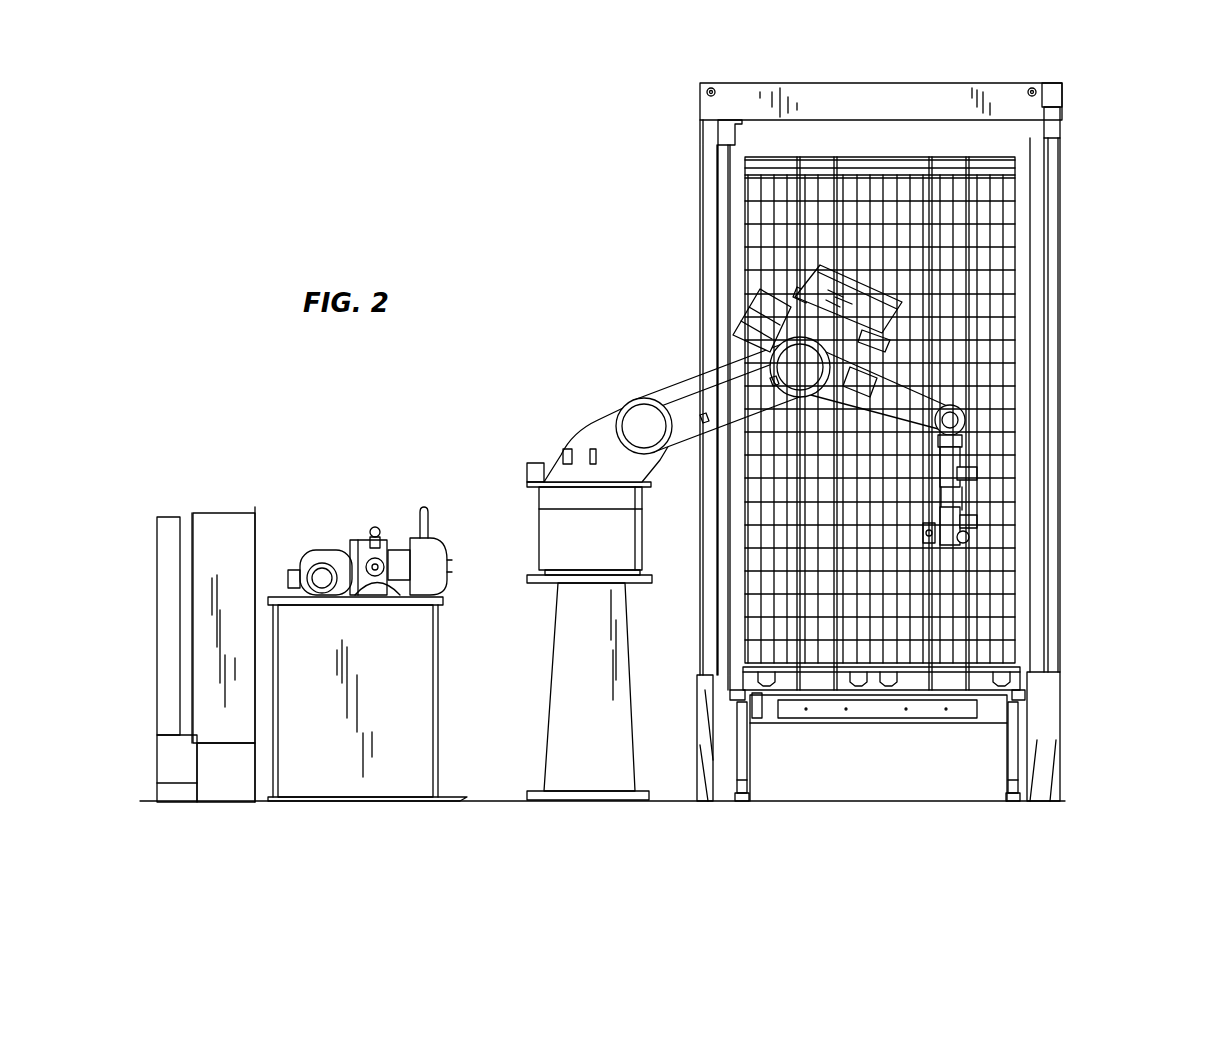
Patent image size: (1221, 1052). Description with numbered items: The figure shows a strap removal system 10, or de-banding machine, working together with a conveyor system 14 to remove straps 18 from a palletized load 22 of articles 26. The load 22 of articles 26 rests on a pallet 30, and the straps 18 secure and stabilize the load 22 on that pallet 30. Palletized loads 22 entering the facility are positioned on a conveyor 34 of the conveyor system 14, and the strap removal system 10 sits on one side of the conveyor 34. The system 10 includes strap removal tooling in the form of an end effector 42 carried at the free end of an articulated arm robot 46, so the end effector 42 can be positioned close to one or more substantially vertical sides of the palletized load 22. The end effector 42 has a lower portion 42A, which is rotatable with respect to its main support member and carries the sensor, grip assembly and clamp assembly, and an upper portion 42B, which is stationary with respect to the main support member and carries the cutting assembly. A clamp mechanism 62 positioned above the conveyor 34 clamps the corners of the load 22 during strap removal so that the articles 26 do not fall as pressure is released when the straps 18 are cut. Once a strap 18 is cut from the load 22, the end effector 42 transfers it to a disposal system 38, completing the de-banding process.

The strap removal system 10 is at (366, 89).
The conveyor system 14 is at (925, 414).
The straps 18 is at (836, 168).
The palletized load 22 is at (1020, 330).
The articles 26 is at (990, 300).
The pallet 30 is at (1007, 675).
The conveyor 34 is at (762, 695).
The disposal system 38 is at (358, 514).
The end effector 42 is at (1069, 490).
The lower portion 42A is at (980, 537).
The upper portion 42B is at (985, 477).
The articulated arm robot 46 is at (605, 430).
The clamp mechanism 62 is at (948, 92).